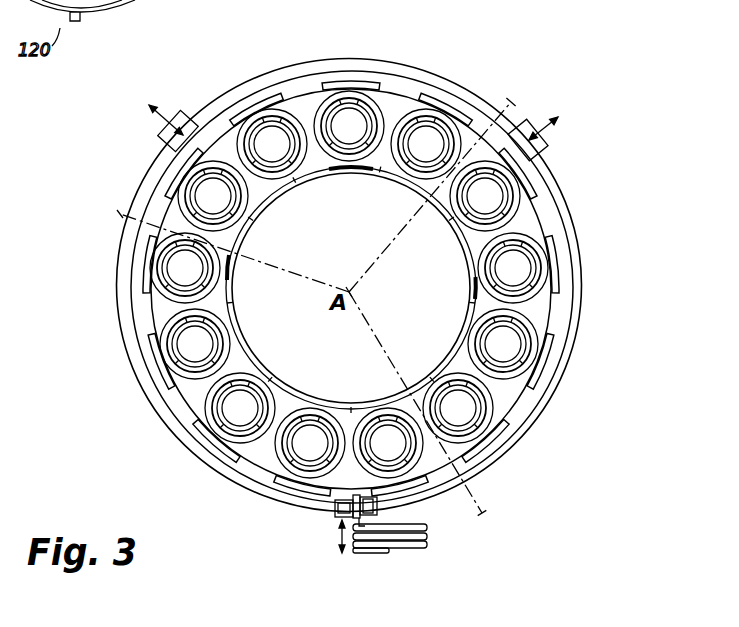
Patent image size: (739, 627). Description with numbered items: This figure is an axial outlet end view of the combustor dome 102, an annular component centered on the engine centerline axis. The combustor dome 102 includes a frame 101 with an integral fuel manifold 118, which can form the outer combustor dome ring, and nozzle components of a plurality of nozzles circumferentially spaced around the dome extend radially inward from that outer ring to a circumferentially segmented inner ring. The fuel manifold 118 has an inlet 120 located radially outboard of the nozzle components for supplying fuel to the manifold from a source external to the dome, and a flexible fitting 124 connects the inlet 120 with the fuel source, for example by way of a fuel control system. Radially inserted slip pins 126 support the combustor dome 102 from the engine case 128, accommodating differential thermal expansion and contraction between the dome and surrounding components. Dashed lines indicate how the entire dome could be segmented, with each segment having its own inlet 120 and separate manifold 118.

The frame 101 is at (398, 76).
The combustor dome 102 is at (491, 84).
The fuel manifold 118 is at (467, 451).
The inlet 120 is at (323, 546).
The flexible fitting 124 is at (421, 547).
The slip pins 126 is at (190, 112).
The engine case 128 is at (571, 213).